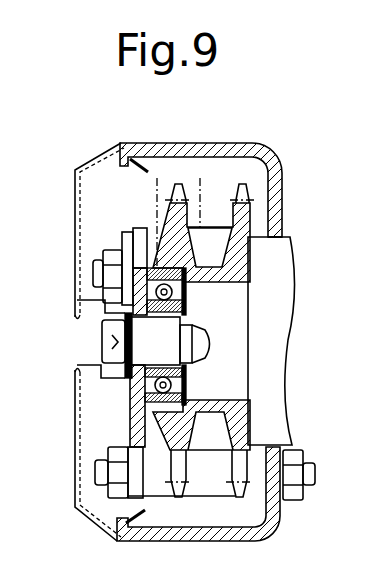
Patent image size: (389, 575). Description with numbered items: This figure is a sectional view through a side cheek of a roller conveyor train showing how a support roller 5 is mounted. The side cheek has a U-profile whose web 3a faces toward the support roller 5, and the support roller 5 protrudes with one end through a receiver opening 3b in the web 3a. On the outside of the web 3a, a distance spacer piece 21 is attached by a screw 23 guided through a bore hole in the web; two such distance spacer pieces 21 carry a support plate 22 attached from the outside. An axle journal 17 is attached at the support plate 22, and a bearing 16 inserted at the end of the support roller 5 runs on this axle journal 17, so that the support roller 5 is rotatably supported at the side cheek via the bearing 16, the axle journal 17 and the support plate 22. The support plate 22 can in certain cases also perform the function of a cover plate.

The web 3a is at (280, 182).
The receiver opening 3b is at (272, 237).
The support roller 5 is at (278, 297).
The bearing 16 is at (162, 292).
The axle journal 17 is at (207, 345).
The distance spacer piece 21 is at (253, 490).
The support plate 22 is at (133, 403).
The screw 23 is at (315, 482).